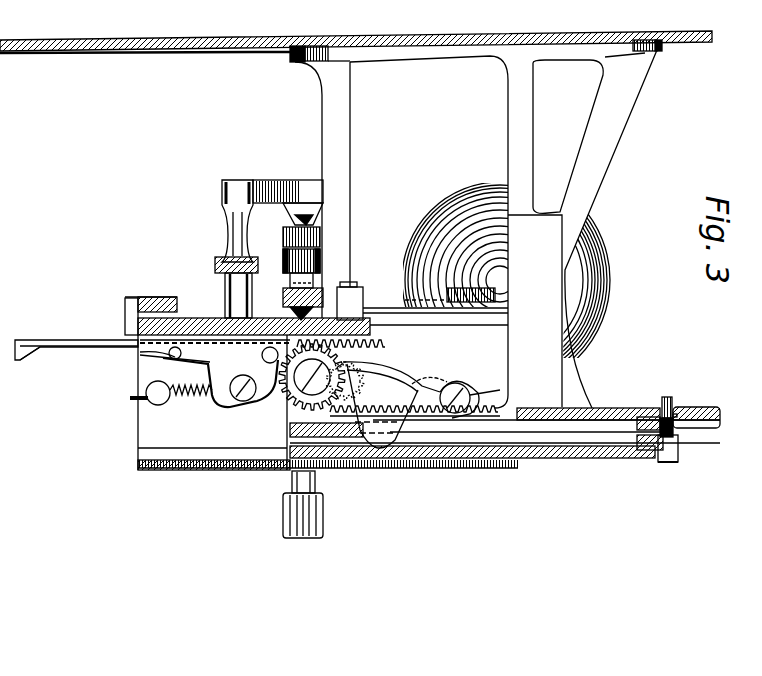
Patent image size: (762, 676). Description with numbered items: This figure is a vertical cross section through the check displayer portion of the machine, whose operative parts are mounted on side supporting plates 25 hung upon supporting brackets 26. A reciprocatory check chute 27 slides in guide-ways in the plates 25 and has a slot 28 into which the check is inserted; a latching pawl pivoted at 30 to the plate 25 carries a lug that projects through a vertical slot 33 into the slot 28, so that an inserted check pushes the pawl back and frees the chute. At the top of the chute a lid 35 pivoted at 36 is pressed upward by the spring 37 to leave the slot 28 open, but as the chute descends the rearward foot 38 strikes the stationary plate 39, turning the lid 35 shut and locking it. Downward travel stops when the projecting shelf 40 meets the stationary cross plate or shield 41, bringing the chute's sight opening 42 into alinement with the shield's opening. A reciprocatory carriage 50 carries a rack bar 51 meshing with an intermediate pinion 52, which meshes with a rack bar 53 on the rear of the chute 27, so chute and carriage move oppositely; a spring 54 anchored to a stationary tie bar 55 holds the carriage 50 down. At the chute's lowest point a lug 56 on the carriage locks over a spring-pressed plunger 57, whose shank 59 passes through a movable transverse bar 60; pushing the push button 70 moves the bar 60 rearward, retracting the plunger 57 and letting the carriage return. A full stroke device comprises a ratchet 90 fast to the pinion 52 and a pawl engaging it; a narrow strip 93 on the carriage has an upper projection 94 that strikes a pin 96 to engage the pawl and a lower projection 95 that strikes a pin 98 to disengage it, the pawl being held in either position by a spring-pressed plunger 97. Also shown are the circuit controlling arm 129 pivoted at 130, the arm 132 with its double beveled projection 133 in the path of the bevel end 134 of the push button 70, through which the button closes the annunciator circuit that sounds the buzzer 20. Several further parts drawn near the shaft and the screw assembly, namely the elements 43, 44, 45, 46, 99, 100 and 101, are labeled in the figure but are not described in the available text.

The buzzer 20 is at (320, 232).
The side supporting plates 25 is at (468, 194).
The supporting brackets 26 is at (343, 123).
The reciprocatory check chute 27 is at (623, 458).
The slot 28 is at (560, 433).
The pawl pivot 30 is at (454, 390).
The vertical slot 33 is at (513, 392).
The lid 35 is at (720, 420).
The lid pivot 36 is at (674, 433).
The spring 37 is at (673, 412).
The rearward foot 38 is at (664, 396).
The stationary plate 39 is at (625, 408).
The projecting shelf 40 is at (663, 460).
The stationary cross plate or shield 41 is at (352, 367).
The sight opening 42 is at (465, 452).
The hatched bearing block 43 is at (398, 460).
The cup 44 is at (370, 466).
The arm link 45 is at (486, 370).
The spring 46 is at (228, 390).
The reciprocatory frame or carriage 50 is at (140, 328).
The rack bar 51 is at (382, 343).
The intermediate pinion 52 is at (300, 392).
The rack bar 53 is at (290, 402).
The spring 54 is at (320, 338).
The stationary tie bar 55 is at (300, 413).
The lug 56 is at (414, 382).
The spring-pressed plunger 57 is at (350, 286).
The shank portion 59 is at (325, 280).
The movable transverse bar 60 is at (320, 252).
The push button 70 is at (283, 520).
The ratchet 90 is at (262, 357).
The narrow strip 93 is at (78, 341).
The projection 94 is at (157, 378).
The projection 95 is at (22, 358).
The pin 96 is at (175, 353).
The spring-pressed plunger 97 is at (196, 396).
The pin 98 is at (138, 352).
The pinion 99 is at (246, 393).
The lock nut 100 is at (286, 338).
The screw tip 101 is at (288, 236).
The circuit controlling arm 129 is at (180, 297).
The pivot 130 is at (200, 268).
The arm 132 is at (278, 188).
The double beveled projection 133 is at (307, 200).
The bevel end 134 is at (218, 270).